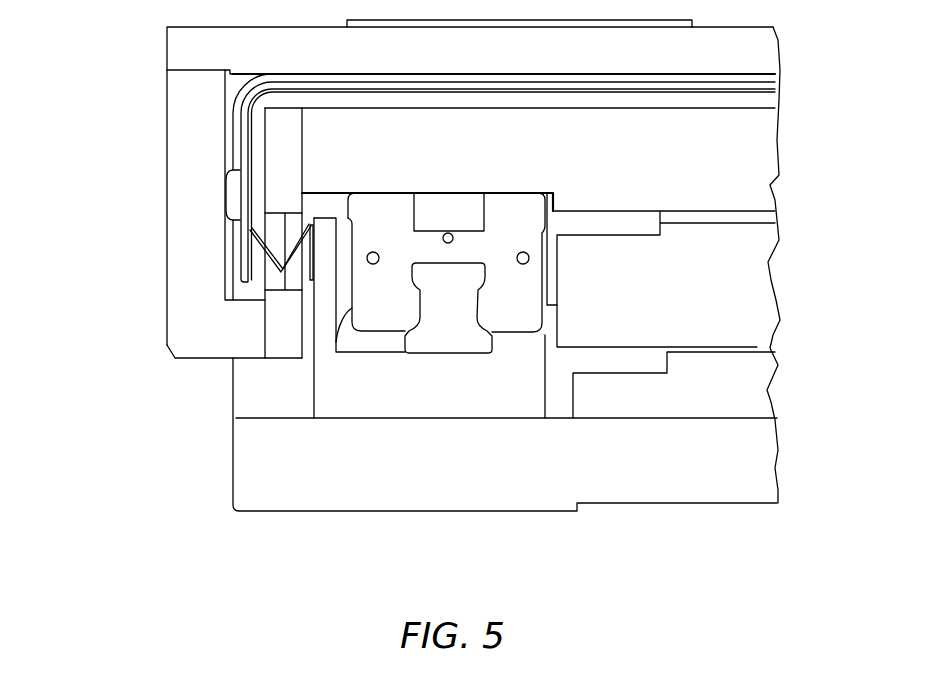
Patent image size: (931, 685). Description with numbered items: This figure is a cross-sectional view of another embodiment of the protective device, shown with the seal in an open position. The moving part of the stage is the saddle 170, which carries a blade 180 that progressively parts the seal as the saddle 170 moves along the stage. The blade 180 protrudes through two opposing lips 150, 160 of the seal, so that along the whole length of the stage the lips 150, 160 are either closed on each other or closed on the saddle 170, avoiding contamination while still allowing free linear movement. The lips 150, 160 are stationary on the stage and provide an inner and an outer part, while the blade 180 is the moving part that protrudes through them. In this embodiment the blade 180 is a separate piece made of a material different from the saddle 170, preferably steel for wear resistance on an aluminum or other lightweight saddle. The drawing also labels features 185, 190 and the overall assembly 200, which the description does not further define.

The lip 150 is at (308, 269).
The lip 160 is at (258, 246).
The saddle 170 is at (745, 150).
The blade 180 is at (277, 137).
The block 185 is at (290, 222).
The side block 190 is at (180, 148).
The connector assembly 200 is at (115, 232).